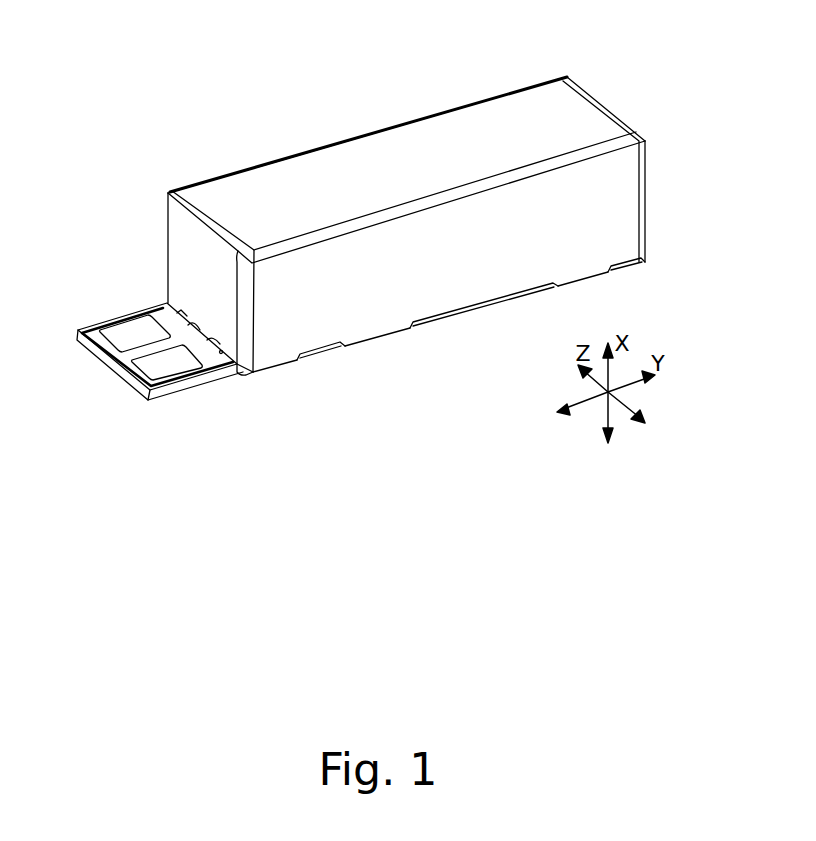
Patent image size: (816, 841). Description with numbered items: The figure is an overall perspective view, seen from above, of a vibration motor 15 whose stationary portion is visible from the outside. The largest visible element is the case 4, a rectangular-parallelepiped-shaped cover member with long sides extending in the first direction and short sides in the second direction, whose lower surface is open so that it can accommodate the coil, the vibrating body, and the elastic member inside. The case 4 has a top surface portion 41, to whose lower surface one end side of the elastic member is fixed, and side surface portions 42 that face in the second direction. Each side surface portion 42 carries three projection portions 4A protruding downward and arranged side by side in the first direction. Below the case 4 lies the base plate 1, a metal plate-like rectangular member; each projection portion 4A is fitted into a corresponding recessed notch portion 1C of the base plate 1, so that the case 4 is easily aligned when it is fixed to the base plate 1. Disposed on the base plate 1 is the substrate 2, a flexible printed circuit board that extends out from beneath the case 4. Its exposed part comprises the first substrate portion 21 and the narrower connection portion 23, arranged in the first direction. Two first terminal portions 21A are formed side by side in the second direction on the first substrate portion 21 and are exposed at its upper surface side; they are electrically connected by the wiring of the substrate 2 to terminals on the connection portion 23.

The vibration motor 15 is at (358, 231).
The case 4 is at (417, 220).
The top surface portion 41 is at (243, 189).
The side surface portion 42 is at (517, 88).
The projection portion 4A is at (275, 371).
The recessed notch portion 1C is at (298, 361).
The base plate 1 is at (160, 401).
The substrate 2 is at (118, 355).
The first substrate portion 21 is at (97, 317).
The first terminal portion 21A is at (153, 369).
The connection portion 23 is at (193, 327).